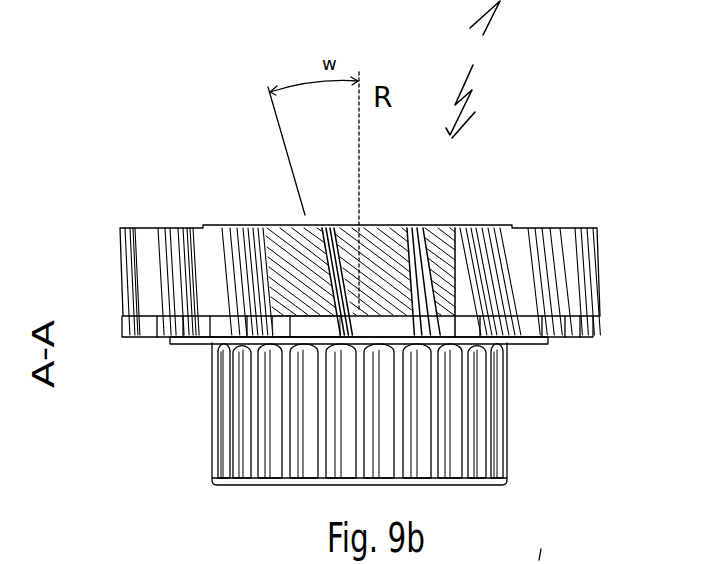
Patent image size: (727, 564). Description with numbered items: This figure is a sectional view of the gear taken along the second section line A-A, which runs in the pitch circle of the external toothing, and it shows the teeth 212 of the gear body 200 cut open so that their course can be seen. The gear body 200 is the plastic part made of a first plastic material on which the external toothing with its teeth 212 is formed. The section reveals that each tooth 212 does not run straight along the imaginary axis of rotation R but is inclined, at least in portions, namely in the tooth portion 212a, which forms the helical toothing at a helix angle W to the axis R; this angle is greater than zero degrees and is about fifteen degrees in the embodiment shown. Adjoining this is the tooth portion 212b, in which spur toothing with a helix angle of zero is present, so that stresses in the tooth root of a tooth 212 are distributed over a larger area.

The gear body 200 is at (554, 217).
The teeth 212 is at (368, 274).
The tooth portion 212a is at (290, 265).
The tooth portion 212b is at (302, 318).